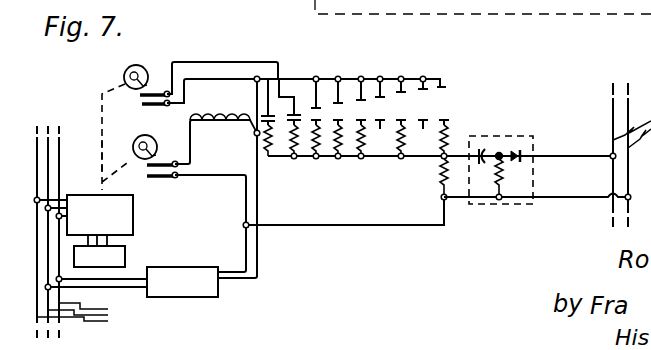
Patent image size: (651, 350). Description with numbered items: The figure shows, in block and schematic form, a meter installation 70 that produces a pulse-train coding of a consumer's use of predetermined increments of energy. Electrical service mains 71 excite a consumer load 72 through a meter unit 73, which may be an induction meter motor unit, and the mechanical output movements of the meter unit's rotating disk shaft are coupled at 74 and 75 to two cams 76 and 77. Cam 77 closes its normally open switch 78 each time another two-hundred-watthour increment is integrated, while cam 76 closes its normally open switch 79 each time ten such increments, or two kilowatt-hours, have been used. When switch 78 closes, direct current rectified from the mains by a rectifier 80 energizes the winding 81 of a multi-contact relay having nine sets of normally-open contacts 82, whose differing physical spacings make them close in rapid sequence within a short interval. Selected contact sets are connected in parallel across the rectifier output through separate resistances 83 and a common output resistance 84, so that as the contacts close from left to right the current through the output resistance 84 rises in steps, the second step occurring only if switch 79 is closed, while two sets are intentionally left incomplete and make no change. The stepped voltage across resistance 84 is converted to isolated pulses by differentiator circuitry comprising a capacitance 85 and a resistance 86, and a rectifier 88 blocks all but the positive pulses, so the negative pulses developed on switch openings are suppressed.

The meter installation 70 is at (444, 228).
The electrical service mains 71 is at (85, 232).
The consumer load 72 is at (125, 257).
The meter unit 73 is at (133, 222).
The coupling 74 is at (102, 93).
The coupling 75 is at (119, 158).
The cam 76 is at (140, 64).
The cam 77 is at (147, 137).
The switch 78 is at (165, 185).
The switch 79 is at (155, 83).
The rectifier 80 is at (195, 297).
The winding 81 is at (212, 126).
The sets of normally-open contacts 82 is at (438, 103).
The resistances 83 is at (315, 160).
The output resistance 84 is at (438, 181).
The capacitance 85 is at (481, 153).
The resistance 86 is at (503, 176).
The rectifier 88 is at (523, 150).